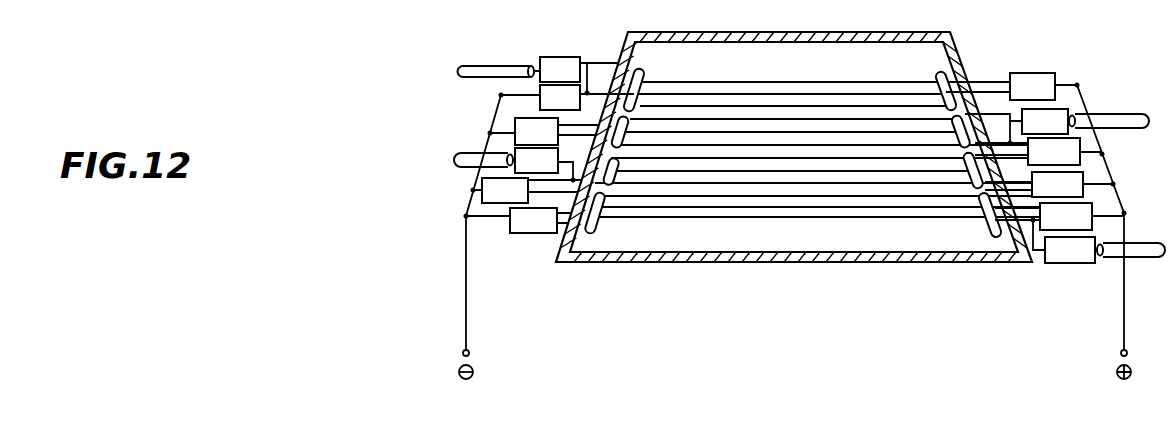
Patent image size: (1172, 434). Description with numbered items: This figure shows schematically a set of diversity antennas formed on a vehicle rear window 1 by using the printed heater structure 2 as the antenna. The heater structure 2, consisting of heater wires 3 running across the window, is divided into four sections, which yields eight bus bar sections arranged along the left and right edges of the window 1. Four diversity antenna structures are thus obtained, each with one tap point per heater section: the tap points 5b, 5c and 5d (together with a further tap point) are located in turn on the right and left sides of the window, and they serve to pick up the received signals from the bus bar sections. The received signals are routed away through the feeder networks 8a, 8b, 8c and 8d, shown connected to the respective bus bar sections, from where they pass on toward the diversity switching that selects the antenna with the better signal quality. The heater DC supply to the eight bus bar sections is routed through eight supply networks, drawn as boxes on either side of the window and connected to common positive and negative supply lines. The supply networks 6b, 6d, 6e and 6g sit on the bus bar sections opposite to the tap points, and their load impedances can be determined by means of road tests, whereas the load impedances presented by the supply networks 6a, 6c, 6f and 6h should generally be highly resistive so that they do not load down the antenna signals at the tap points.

The rear window 1 is at (946, 245).
The heater structure 2 is at (755, 117).
The heater wires 3 is at (746, 218).
The tap point 5b is at (954, 136).
The tap point 5c is at (617, 174).
The tap point 5d is at (641, 97).
The supply network 6a is at (566, 107).
The supply network 6b is at (543, 141).
The supply network 6c is at (511, 200).
The supply network 6d is at (539, 230).
The supply network 6e is at (1038, 96).
The supply network 6f is at (1056, 161).
The supply network 6g is at (1062, 194).
The supply network 6h is at (1070, 226).
The feeder network 8a is at (566, 79).
The feeder network 8b is at (1050, 131).
The feeder network 8c is at (542, 170).
The feeder network 8d is at (1075, 260).